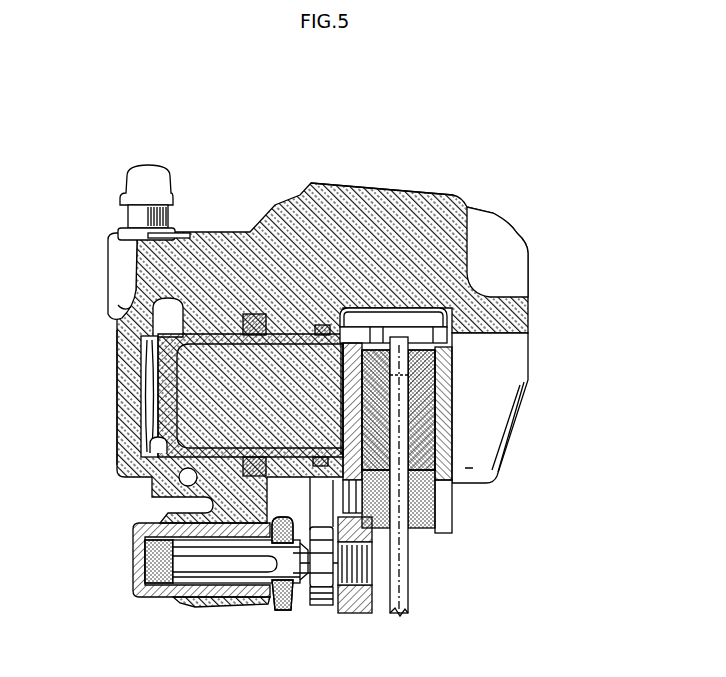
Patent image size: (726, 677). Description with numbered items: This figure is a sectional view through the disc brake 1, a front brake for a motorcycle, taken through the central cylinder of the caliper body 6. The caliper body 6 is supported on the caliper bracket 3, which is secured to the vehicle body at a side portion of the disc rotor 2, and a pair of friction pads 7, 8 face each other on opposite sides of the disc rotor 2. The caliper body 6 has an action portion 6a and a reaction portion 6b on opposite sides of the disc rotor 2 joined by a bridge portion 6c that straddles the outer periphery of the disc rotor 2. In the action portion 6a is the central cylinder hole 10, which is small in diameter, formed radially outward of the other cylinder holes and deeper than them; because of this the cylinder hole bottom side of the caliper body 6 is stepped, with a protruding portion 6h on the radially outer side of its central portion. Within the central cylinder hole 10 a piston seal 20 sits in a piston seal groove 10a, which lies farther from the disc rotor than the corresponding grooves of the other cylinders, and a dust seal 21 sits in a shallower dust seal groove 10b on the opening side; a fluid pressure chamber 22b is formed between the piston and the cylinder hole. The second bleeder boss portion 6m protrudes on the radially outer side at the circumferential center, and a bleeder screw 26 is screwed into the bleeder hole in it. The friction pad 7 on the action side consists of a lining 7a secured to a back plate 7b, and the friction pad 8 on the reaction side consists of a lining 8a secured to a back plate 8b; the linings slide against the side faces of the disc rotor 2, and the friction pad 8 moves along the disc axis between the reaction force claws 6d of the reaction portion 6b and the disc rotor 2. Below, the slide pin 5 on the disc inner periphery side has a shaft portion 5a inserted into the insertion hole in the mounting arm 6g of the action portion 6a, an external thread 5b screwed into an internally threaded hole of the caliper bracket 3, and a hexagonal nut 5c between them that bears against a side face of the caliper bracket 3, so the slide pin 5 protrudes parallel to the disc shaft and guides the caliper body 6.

The disc brake 1 is at (339, 114).
The disc rotor 2 is at (399, 585).
The caliper bracket 3 is at (352, 613).
The slide pin 5 is at (288, 598).
The shaft portion 5a is at (207, 570).
The external thread 5b is at (365, 558).
The hexagonal nut 5c is at (320, 590).
The caliper body 6 is at (498, 200).
The action portion 6a is at (128, 307).
The reaction portion 6b is at (514, 282).
The bridge portion 6c is at (366, 196).
The reaction force claw 6d is at (484, 443).
The mounting arm 6g is at (227, 606).
The protruding portion 6h is at (122, 418).
The second bleeder boss portion 6m is at (115, 270).
The friction pad 7 is at (294, 357).
The lining 7a is at (343, 386).
The back plate 7b is at (343, 358).
The friction pad 8 is at (497, 346).
The lining 8a is at (445, 352).
The back plate 8b is at (445, 372).
The central cylinder hole 10 is at (148, 452).
The piston seal groove 10a is at (254, 457).
The dust seal groove 10b is at (318, 457).
The piston seal 20 is at (254, 314).
The dust seal 21 is at (320, 325).
The fluid pressure chamber 22b is at (150, 380).
The bleeder screw 26 is at (128, 220).